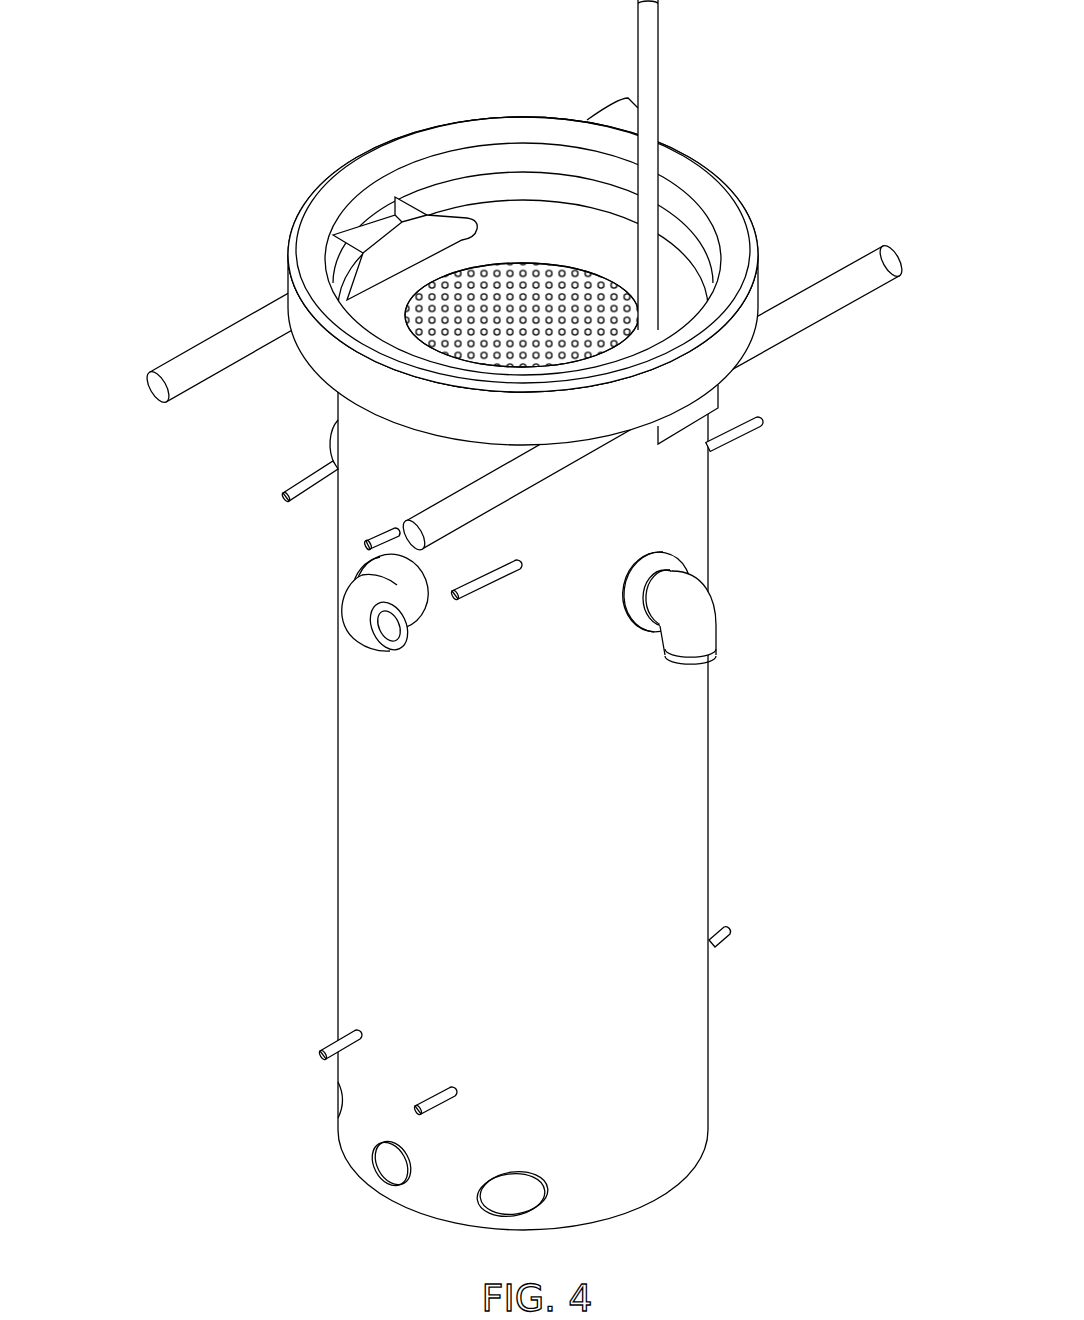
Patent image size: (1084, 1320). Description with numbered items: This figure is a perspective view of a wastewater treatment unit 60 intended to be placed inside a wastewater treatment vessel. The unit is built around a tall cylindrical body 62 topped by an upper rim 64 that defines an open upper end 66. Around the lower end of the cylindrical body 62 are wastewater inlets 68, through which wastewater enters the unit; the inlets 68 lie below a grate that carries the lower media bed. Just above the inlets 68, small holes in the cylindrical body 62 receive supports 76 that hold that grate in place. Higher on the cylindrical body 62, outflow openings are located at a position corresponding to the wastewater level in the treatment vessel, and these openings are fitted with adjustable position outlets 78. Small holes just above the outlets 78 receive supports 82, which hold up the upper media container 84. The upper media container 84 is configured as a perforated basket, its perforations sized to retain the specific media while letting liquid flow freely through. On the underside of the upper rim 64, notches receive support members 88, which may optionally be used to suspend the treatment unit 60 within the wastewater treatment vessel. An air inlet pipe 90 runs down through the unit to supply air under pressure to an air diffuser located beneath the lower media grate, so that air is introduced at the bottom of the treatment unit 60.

The wastewater treatment unit 60 is at (174, 826).
The cylindrical body 62 is at (690, 832).
The upper rim 64 is at (558, 281).
The open upper end 66 is at (404, 96).
The wastewater inlets 68 is at (392, 1172).
The supports 76 is at (720, 947).
The adjustable position outlets 78 is at (355, 632).
The supports 82 is at (368, 546).
The upper media container 84 is at (577, 270).
The support members 88 is at (150, 363).
The air inlet pipe 90 is at (658, 68).